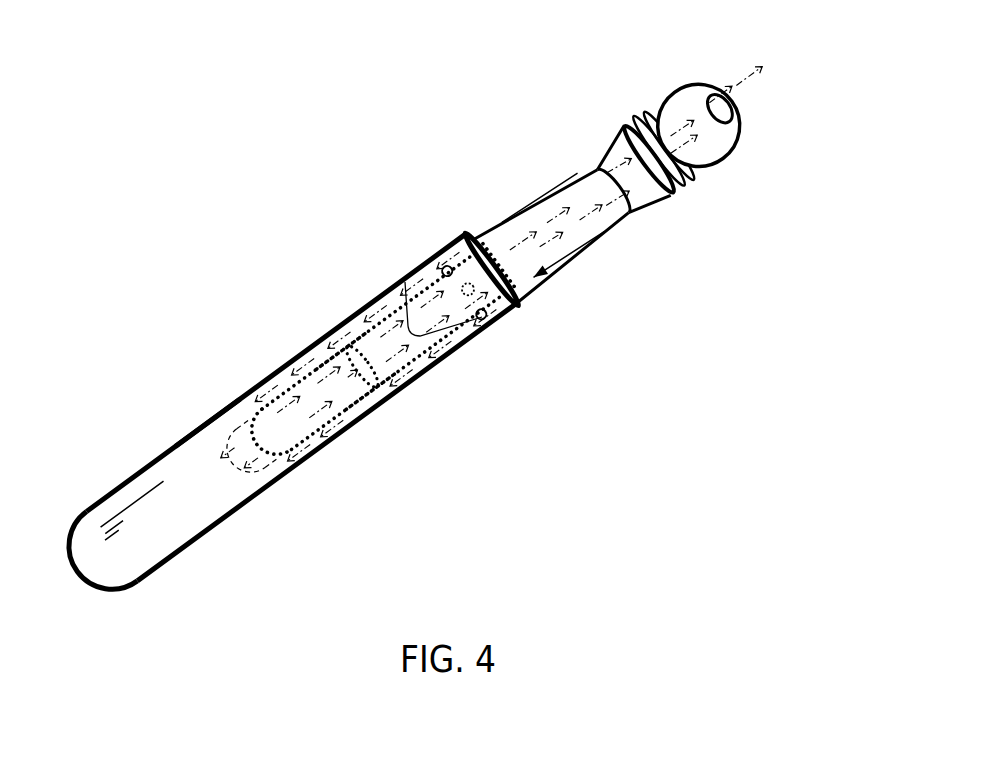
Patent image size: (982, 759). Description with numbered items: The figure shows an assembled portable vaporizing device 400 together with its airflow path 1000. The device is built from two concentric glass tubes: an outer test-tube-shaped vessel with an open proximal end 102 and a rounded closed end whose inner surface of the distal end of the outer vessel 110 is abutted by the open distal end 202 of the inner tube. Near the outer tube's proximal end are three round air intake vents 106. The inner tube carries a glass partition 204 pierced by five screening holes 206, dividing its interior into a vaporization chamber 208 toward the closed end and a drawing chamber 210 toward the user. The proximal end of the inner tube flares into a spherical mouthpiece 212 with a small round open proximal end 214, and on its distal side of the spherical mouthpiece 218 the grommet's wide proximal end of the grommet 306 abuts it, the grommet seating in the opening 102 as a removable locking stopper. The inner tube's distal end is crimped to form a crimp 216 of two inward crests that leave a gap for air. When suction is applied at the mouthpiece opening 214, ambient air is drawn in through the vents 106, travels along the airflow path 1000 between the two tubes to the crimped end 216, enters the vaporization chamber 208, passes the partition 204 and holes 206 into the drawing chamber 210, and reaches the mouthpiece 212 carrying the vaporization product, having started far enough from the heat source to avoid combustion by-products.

The open proximal end 102 is at (520, 297).
The air intake vents 106 is at (449, 266).
The inner surface of the distal end of the outer vessel 110 is at (73, 567).
The open distal end 202 is at (297, 462).
The glass partition 204 is at (332, 344).
The screening holes 206 is at (363, 350).
The vaporization chamber 208 is at (323, 397).
The drawing chamber 210 is at (480, 330).
The spherical mouthpiece 212 is at (716, 142).
The open proximal end 214 is at (722, 105).
The crimp 216 is at (248, 404).
The distal side of the spherical mouthpiece 218 is at (625, 122).
The proximal end of the grommet 306 is at (697, 170).
The portable vaporizing device 400 is at (480, 418).
The airflow path 1000 is at (478, 206).